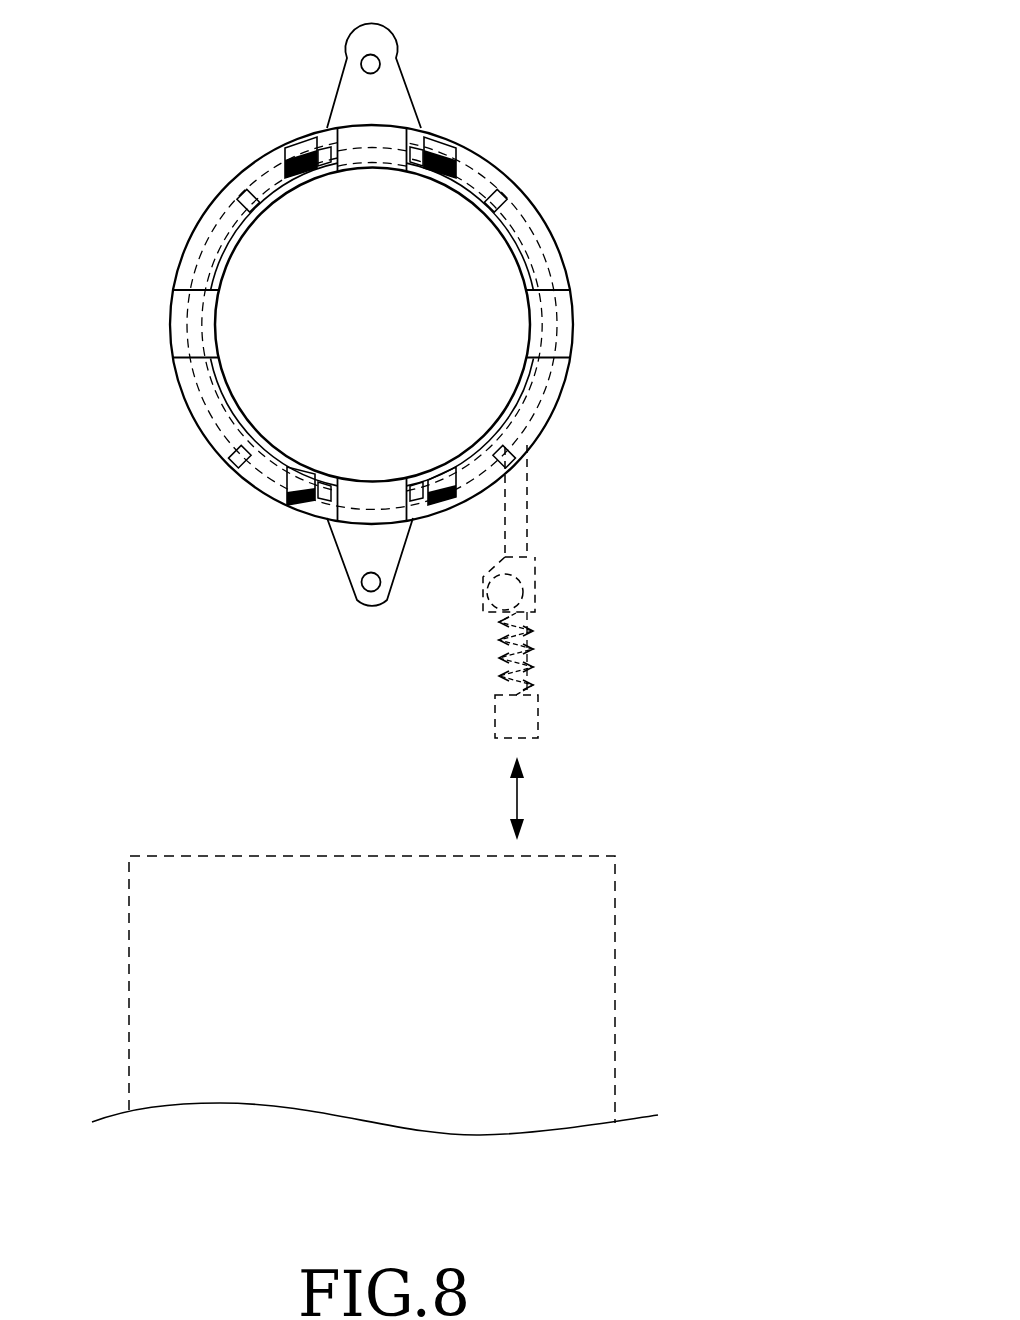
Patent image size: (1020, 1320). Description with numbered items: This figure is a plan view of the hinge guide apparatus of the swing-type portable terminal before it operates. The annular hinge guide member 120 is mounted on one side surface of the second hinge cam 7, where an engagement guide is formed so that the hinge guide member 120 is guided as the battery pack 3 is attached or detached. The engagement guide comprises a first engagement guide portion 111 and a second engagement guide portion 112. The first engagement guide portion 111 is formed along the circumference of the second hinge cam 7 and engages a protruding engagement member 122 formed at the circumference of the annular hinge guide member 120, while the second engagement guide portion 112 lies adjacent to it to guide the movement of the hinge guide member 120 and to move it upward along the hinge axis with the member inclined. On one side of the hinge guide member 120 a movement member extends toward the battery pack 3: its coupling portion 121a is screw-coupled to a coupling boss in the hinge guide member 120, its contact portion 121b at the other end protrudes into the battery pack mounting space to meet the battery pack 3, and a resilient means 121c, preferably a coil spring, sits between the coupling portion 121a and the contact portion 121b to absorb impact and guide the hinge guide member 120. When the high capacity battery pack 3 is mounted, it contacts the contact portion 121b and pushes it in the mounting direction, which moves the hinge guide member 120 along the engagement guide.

The second hinge cam 7 is at (168, 255).
The hinge guide member 120 is at (546, 224).
The engagement member 122 is at (322, 150).
The second engagement guide portion 112 is at (288, 141).
The first engagement guide portion 111 is at (257, 195).
The coupling portion 121a is at (506, 592).
The contact portion 121b is at (515, 518).
The resilient means 121c is at (530, 630).
The battery pack 3 is at (592, 1005).